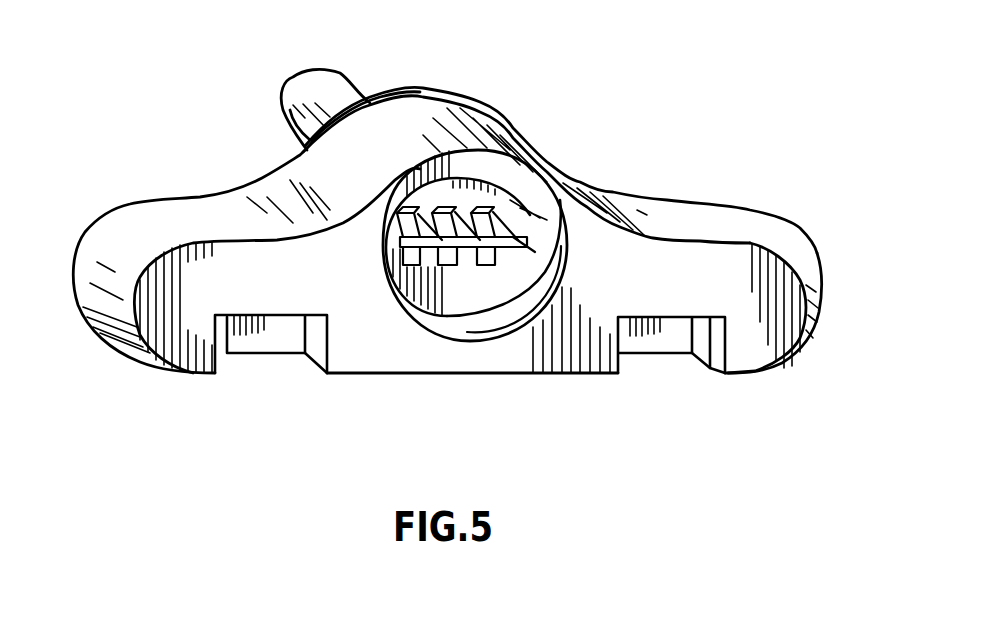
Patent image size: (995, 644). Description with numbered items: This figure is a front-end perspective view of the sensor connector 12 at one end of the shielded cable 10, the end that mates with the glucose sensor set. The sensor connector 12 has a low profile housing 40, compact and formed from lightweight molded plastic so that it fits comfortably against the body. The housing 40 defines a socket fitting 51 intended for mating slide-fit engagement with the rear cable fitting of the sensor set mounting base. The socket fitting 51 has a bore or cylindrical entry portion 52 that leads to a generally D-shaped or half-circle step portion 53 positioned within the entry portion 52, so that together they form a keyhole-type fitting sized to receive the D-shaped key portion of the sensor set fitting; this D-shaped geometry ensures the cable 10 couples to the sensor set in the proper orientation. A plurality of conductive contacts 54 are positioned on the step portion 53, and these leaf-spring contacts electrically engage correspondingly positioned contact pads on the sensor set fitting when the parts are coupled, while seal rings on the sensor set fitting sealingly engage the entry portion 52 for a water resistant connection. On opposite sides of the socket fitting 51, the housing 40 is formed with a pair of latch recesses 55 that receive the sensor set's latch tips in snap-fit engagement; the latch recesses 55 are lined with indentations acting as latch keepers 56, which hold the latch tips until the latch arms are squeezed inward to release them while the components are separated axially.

The shielded cable 10 is at (337, 88).
The sensor connector 12 is at (650, 182).
The low profile housing 40 is at (723, 213).
The socket fitting 51 is at (450, 352).
The cylindrical entry portion 52 is at (513, 318).
The step portion 53 is at (513, 237).
The conductive contacts 54 is at (430, 225).
The latch recesses 55 is at (272, 343).
The latch keepers 56 is at (227, 380).